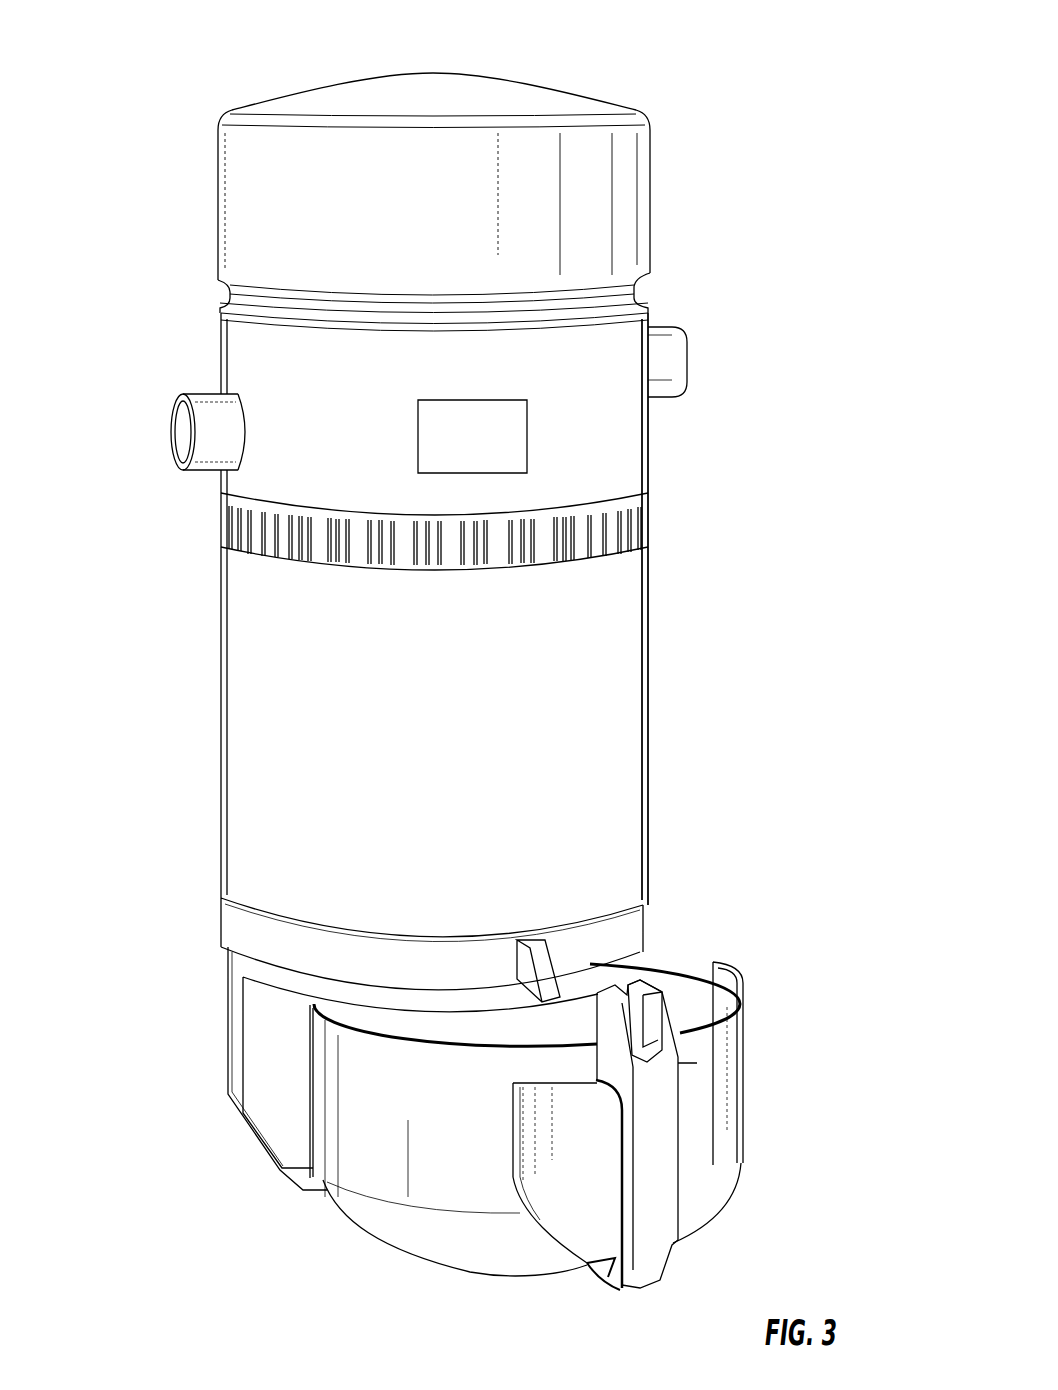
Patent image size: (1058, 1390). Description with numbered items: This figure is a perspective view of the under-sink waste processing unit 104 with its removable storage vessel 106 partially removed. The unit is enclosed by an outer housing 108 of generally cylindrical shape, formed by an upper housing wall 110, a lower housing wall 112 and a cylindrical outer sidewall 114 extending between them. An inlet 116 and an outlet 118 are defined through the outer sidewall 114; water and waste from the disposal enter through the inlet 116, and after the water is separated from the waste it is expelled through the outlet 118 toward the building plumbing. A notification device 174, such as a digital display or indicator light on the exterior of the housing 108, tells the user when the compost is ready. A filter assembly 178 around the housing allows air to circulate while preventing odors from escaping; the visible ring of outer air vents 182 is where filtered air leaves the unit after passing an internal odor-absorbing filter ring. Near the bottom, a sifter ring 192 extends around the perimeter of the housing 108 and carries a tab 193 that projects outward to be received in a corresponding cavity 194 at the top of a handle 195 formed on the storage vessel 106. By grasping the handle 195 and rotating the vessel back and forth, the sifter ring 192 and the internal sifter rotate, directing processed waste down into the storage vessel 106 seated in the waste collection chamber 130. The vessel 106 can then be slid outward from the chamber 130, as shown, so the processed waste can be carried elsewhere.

The waste processing unit 104 is at (776, 188).
The removable storage vessel 106 is at (749, 1019).
The outer housing 108 is at (248, 663).
The upper housing wall 110 is at (458, 72).
The lower housing wall 112 is at (303, 1190).
The cylindrical outer sidewall 114 is at (650, 728).
The inlet 116 is at (183, 435).
The outlet 118 is at (688, 362).
The waste collection chamber 130 is at (233, 1093).
The notification device 174 is at (467, 398).
The filter assembly 178 is at (221, 528).
The outer air vents 182 is at (448, 568).
The sifter ring 192 is at (243, 932).
The tab 193 is at (528, 967).
The cavity 194 is at (643, 998).
The handle 195 is at (663, 1173).